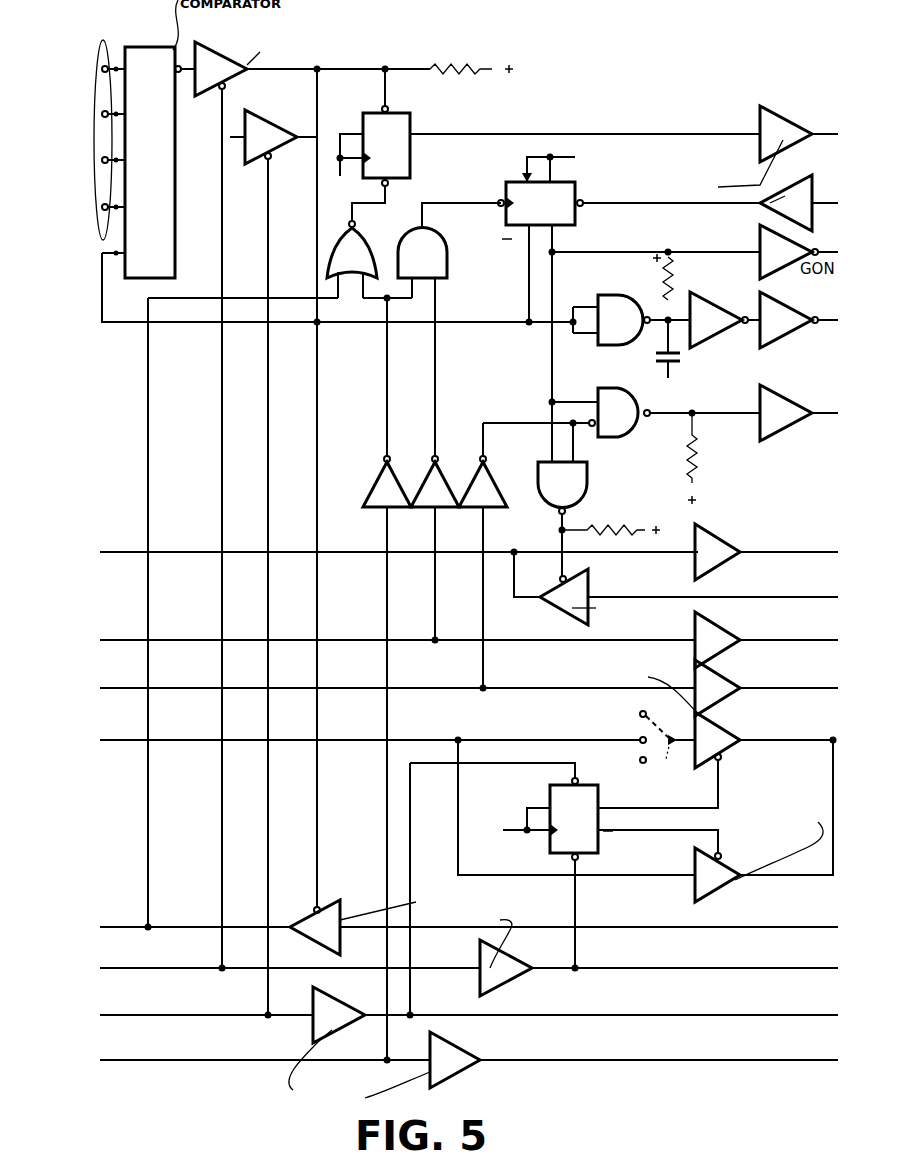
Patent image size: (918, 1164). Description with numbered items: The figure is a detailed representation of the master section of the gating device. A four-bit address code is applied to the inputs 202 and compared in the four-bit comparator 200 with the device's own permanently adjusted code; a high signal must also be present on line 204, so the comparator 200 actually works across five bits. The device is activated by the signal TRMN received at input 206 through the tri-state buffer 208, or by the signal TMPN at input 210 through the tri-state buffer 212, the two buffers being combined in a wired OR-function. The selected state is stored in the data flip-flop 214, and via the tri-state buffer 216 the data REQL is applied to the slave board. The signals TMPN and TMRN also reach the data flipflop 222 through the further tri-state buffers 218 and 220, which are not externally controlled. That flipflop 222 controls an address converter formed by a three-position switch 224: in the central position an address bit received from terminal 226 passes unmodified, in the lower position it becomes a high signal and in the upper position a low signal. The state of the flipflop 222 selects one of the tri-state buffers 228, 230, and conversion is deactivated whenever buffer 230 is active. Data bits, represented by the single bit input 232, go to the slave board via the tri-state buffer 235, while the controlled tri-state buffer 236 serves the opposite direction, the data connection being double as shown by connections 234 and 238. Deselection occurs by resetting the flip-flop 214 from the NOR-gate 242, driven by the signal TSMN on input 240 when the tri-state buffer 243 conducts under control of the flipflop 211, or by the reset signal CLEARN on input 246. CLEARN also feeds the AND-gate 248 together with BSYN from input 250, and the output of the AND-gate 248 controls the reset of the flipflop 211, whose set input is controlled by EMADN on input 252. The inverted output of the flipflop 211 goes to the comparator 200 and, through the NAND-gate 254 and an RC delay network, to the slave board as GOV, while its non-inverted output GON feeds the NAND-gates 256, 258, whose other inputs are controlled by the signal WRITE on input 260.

The four-bit comparator 200 is at (176, 228).
The inputs 202 is at (112, 48).
The line 204 is at (103, 326).
The input 206 is at (114, 970).
The tri-state buffer 208 is at (224, 50).
The input 210 is at (114, 1017).
The flipflop 211 is at (576, 218).
The tri-state buffer 212 is at (252, 116).
The data flip-flop 214 is at (545, 146).
The tri-state buffer 216 is at (785, 118).
The tri-state buffer 218 is at (322, 1038).
The tri-state buffer 220 is at (504, 984).
The data flipflop 222 is at (548, 846).
The three-position switch 224 is at (664, 760).
The terminal 226 is at (108, 737).
The tri-state buffer 228 is at (728, 724).
The tri-state buffer 230 is at (728, 870).
The single bit input 232 is at (108, 549).
The connection 234 is at (790, 546).
The tri-state buffer 235 is at (705, 606).
The controlled tri-state buffer 236 is at (592, 580).
The connection 238 is at (794, 597).
The input 240 is at (795, 927).
The NOR-gate 242 is at (328, 258).
The tri-state buffer 243 is at (342, 904).
The input 246 is at (114, 1063).
The AND-gate 248 is at (447, 262).
The input 250 is at (108, 637).
The input 252 is at (820, 200).
The NAND-gate 254 is at (612, 295).
The NAND-gate 256 is at (640, 430).
The NAND-gate 258 is at (590, 484).
The input 260 is at (108, 685).